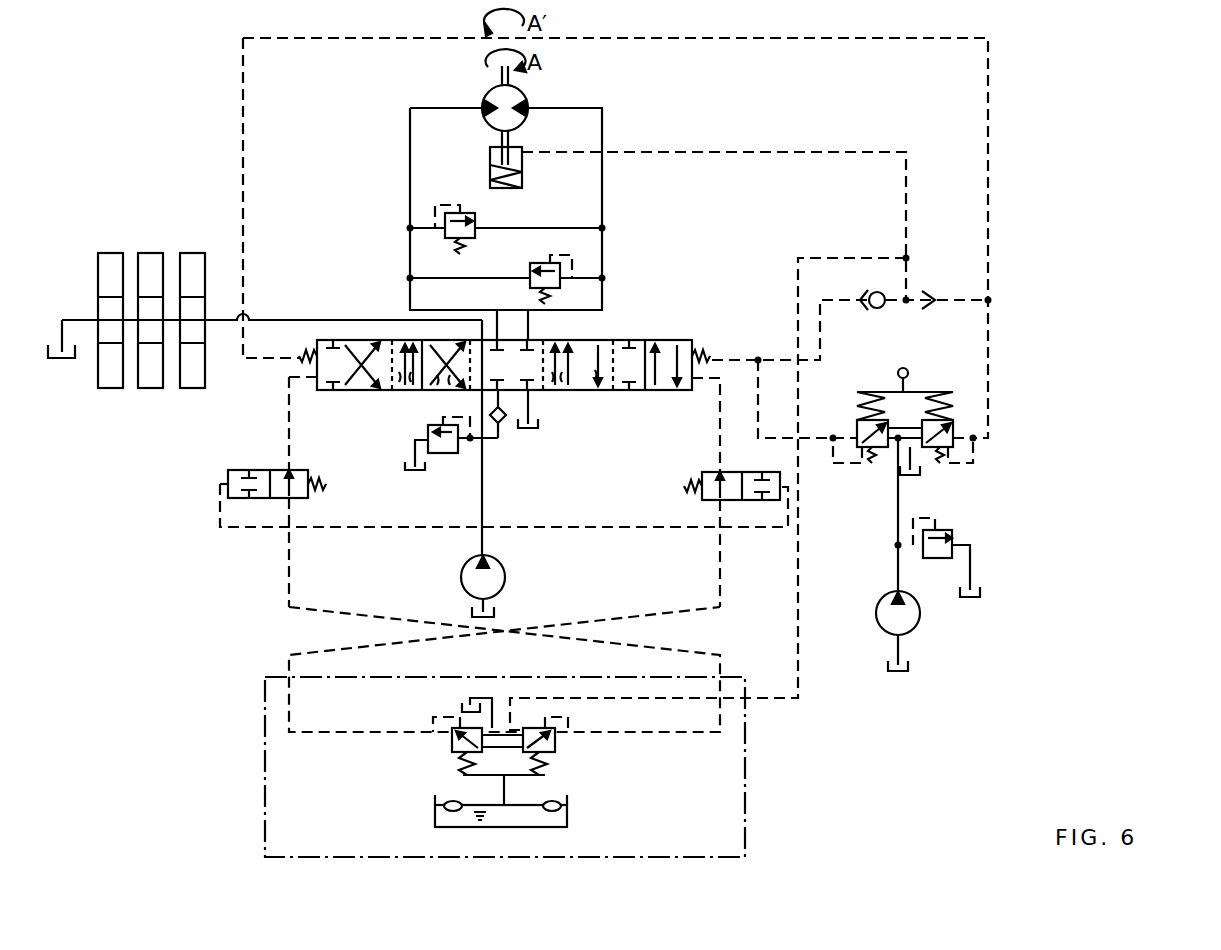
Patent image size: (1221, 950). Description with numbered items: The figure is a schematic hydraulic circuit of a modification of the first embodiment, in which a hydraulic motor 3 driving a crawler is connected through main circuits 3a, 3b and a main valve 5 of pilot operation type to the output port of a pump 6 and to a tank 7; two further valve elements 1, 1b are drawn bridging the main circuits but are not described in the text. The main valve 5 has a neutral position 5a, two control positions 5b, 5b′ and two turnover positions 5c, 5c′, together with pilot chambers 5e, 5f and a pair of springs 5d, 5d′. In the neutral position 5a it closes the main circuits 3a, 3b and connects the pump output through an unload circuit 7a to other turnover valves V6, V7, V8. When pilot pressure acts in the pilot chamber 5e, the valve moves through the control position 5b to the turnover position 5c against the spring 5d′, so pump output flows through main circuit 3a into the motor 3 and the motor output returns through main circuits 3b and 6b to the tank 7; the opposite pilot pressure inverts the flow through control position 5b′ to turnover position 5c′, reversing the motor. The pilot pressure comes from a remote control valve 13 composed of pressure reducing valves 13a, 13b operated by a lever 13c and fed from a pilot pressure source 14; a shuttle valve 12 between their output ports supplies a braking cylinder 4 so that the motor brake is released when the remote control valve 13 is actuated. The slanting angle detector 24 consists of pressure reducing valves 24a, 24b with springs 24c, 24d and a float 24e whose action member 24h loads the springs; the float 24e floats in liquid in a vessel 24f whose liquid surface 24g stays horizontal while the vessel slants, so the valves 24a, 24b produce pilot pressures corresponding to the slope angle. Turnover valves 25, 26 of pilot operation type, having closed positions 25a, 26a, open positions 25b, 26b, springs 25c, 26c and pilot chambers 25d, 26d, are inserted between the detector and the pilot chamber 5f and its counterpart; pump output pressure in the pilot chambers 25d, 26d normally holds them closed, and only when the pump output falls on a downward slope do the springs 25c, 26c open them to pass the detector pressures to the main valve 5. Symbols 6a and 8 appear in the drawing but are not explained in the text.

The relief valve 1 is at (475, 222).
The relief valve 1b is at (530, 271).
The hydraulic motor 3 is at (527, 98).
The main circuit 3a is at (410, 150).
The main circuit 3b is at (602, 108).
The braking cylinder 4 is at (522, 180).
The main valve of pilot operation type 5 is at (624, 320).
The neutral position 5a is at (512, 335).
The control position 5b is at (572, 390).
The control position 5b′ is at (415, 392).
The turnover position 5c is at (638, 390).
The turnover position 5c′ is at (325, 392).
The spring 5d is at (712, 350).
The spring 5d′ is at (309, 347).
The pilot chamber 5e is at (312, 362).
The pilot chamber 5f is at (315, 390).
The pump 6 is at (505, 577).
The check valve 6a is at (480, 405).
The main circuit 6b is at (535, 398).
The tank 7 is at (72, 365).
The unload circuit 7a is at (280, 318).
The relief valve 8 is at (428, 435).
The shuttle valve 12 is at (929, 282).
The remote control valve 13 is at (944, 482).
The pressure reducing valve 13a is at (857, 425).
The pressure reducing valve 13b is at (955, 425).
The lever 13c is at (908, 378).
The pilot pressure source 14 is at (882, 630).
The slanting angle detector 24 is at (745, 830).
The pressure reducing valve 24a is at (555, 745).
The pressure reducing valve 24b is at (452, 745).
The spring 24c is at (515, 787).
The spring 24d is at (462, 765).
The float 24e is at (558, 802).
The vessel 24f is at (567, 822).
The liquid surface 24g is at (440, 810).
The action member 24h is at (470, 778).
The turnover valve of pilot operation type 25 is at (223, 463).
The closed position 25a is at (258, 470).
The open position 25b is at (308, 470).
The spring 25c is at (318, 491).
The pilot chamber 25d is at (228, 482).
The turnover valve of pilot operation type 26 is at (678, 473).
The closed position 26a is at (762, 472).
The open position 26b is at (705, 472).
The spring 26c is at (695, 492).
The pilot chamber 26d is at (780, 483).
The turnover valve V6 is at (192, 388).
The turnover valve V7 is at (150, 388).
The turnover valve V8 is at (110, 388).